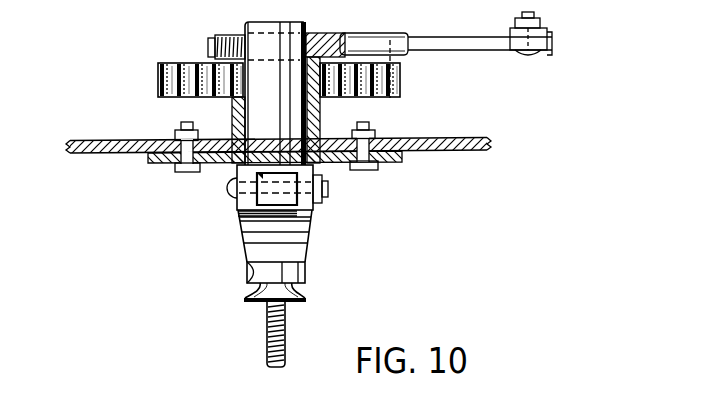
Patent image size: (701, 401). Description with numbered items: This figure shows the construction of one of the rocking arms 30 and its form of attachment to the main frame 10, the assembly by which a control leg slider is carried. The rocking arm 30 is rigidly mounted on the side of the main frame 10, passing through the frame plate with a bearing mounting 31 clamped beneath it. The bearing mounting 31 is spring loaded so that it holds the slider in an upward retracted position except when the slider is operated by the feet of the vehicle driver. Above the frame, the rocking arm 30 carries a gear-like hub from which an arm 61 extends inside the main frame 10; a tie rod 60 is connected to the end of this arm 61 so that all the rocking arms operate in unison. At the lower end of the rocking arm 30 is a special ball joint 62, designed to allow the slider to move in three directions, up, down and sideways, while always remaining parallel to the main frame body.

The main frame 10 is at (468, 151).
The rocking arm 30 is at (312, 225).
The bearing mounting 31 is at (241, 165).
The tie rod 60 is at (547, 32).
The arm 61 is at (467, 43).
The ball joint 62 is at (295, 288).